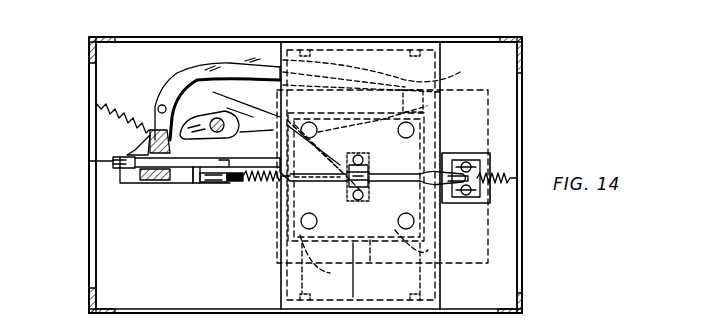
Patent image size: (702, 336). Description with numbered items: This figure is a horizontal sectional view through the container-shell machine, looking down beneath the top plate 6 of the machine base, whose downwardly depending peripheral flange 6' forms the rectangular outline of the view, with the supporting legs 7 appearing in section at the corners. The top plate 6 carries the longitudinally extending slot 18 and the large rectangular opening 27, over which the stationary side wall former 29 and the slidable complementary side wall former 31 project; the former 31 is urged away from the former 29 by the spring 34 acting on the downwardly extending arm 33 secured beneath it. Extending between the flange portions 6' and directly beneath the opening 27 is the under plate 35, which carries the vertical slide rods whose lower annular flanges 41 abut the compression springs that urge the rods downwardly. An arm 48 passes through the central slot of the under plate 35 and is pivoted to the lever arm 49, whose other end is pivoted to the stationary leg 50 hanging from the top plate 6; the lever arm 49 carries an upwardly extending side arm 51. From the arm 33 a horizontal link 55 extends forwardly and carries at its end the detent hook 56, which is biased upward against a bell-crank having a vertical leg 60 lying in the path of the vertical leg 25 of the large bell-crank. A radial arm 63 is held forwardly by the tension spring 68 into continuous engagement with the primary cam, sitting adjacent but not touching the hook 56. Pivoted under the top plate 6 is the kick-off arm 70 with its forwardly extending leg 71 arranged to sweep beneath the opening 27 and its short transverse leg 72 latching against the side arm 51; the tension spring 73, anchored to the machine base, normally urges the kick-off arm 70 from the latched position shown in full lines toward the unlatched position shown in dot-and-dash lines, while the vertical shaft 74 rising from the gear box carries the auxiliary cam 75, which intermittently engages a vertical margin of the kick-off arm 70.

The top plate 6 is at (306, 162).
The peripheral flange 6' is at (304, 178).
The front supporting legs 7 is at (522, 58).
The longitudinally extending slot 18 is at (181, 185).
The vertical leg of the large bell-crank 25 is at (148, 181).
The rectangular opening 27 is at (395, 266).
The side wall former 29 is at (327, 270).
The complementary side wall former 31 is at (488, 116).
The downwardly extending arm 33 is at (465, 170).
The spring 34 is at (498, 190).
The under plate 35 is at (440, 290).
The annular flanges 41 is at (317, 130).
The arm 48 is at (370, 184).
The lever arm 49 is at (204, 185).
The stationary leg 50 is at (118, 170).
The side arm 51 is at (132, 170).
The horizontal link 55 is at (403, 174).
The detent hook 56 is at (224, 162).
The vertical leg 60 is at (206, 185).
The radial arm 63 is at (226, 183).
The tension spring 68 is at (263, 183).
The kick-off arm 70 is at (223, 68).
The forwardly extending leg 71 is at (467, 70).
The short transverse leg 72 is at (153, 122).
The tension spring 73 is at (127, 133).
The vertical shaft 74 is at (225, 135).
The auxiliary cam 75 is at (208, 150).